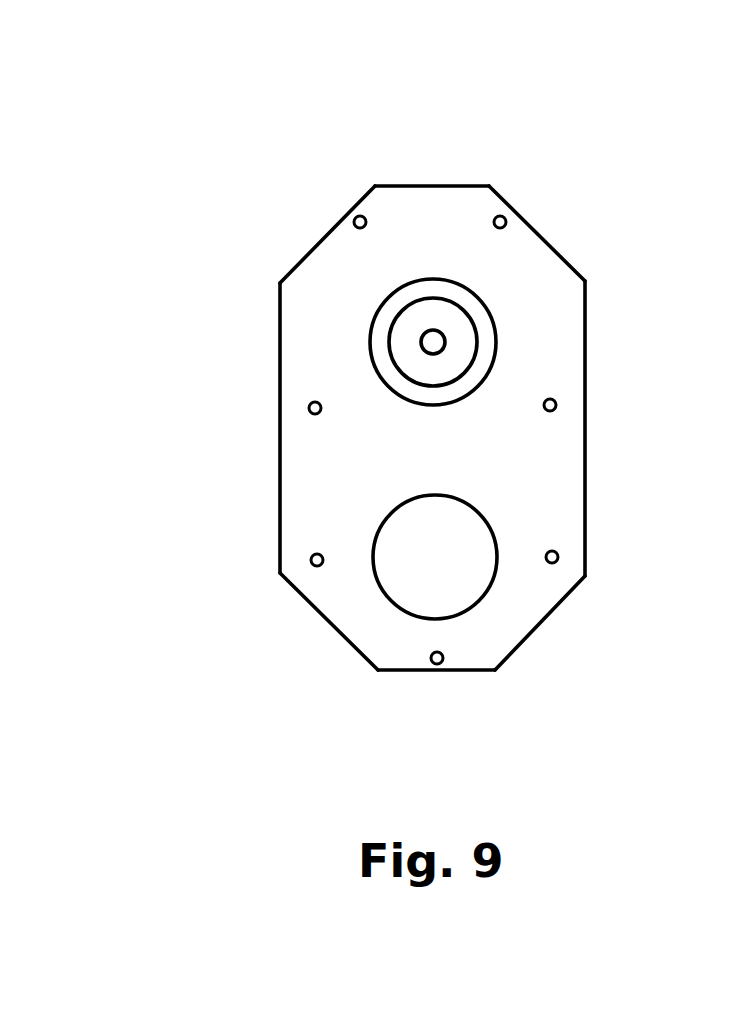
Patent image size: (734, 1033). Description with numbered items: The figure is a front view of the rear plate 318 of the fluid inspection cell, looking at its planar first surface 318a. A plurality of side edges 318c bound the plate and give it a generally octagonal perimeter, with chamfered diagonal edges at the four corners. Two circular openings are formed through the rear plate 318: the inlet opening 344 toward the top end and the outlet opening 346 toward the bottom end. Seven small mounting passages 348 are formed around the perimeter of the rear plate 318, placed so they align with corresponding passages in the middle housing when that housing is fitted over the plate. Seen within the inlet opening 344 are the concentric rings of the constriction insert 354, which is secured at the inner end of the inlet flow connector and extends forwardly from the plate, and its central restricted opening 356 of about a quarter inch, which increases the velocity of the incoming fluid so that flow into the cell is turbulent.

The rear plate 318 is at (447, 389).
The first surface 318a is at (407, 243).
The side edges 318c is at (327, 230).
The inlet opening 344 is at (497, 345).
The outlet opening 346 is at (495, 535).
The mounting passages 348 is at (358, 214).
The constriction insert 354 is at (402, 335).
The restricted opening 356 is at (433, 342).